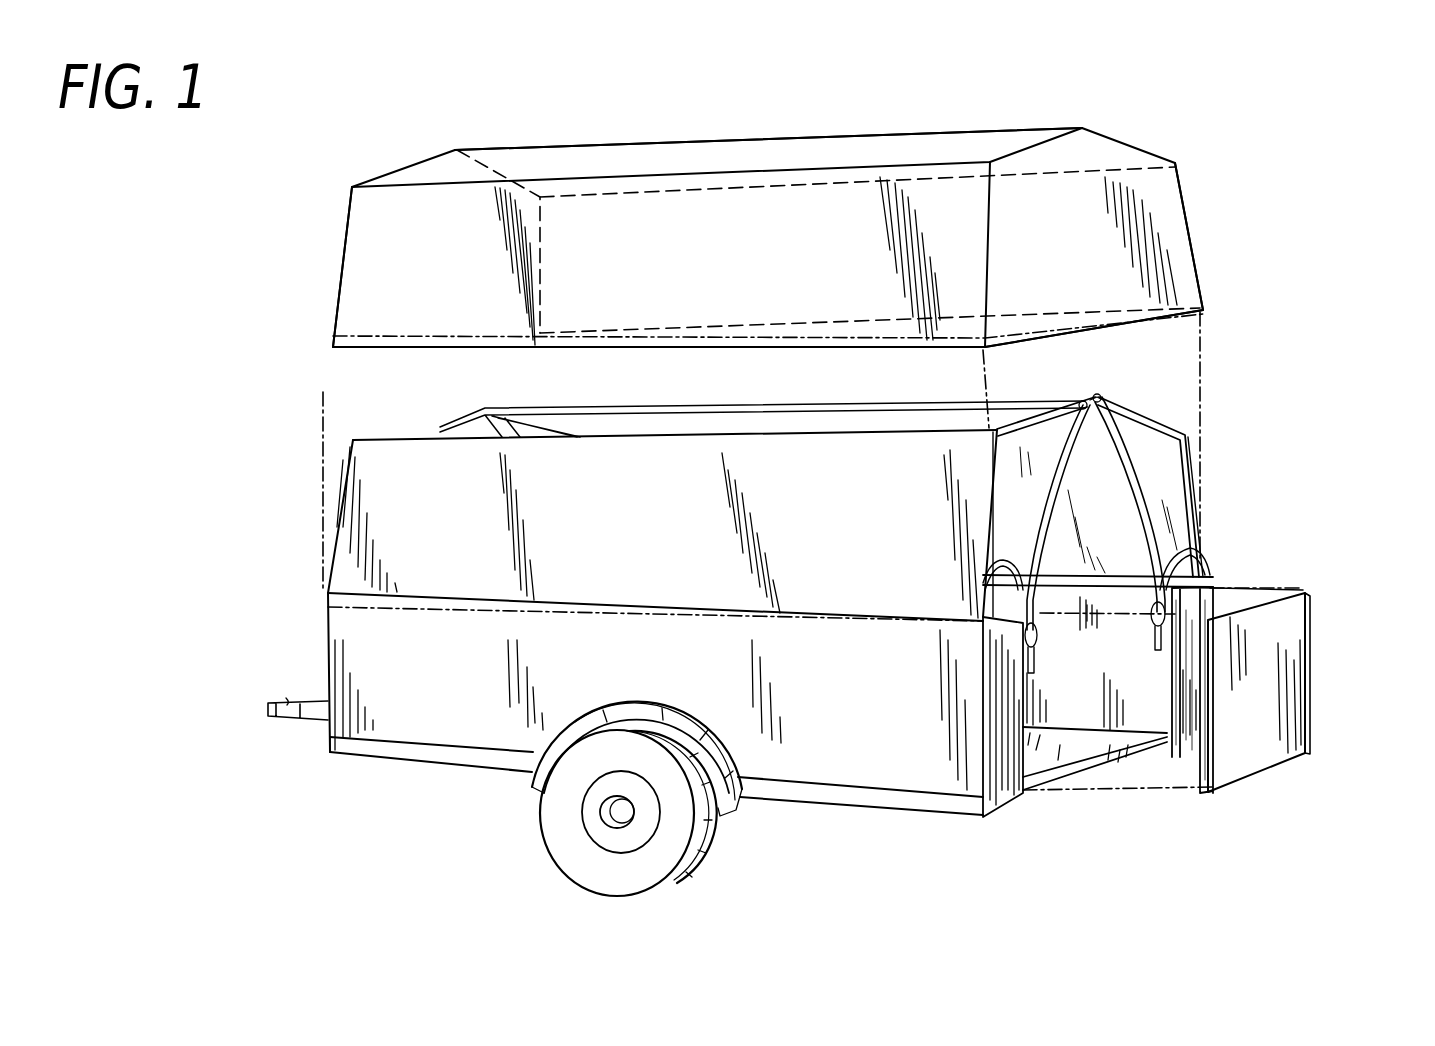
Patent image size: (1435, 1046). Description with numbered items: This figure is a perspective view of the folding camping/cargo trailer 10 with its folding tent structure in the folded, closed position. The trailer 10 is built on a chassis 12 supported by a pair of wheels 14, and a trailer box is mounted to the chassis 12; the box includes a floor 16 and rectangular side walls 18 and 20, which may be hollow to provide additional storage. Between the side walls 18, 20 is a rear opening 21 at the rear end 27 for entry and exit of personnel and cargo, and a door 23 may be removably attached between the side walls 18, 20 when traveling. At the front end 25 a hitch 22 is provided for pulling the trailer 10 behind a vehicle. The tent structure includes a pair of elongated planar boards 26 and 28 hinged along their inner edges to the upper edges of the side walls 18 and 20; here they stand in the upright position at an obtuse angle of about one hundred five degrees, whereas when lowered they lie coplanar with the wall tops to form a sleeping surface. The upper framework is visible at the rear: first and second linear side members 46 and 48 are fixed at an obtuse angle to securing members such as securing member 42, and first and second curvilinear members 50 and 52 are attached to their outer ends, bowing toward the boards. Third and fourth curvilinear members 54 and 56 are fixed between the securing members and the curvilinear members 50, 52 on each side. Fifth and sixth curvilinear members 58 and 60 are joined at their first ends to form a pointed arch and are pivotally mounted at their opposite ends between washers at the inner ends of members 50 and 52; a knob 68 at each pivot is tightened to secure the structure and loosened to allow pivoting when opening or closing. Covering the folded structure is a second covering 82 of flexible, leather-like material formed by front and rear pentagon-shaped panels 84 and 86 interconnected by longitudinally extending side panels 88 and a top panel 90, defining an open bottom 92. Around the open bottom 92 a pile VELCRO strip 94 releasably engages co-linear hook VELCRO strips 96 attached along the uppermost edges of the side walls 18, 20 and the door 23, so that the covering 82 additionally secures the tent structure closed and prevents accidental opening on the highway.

The folding camping/cargo trailer 10 is at (321, 390).
The chassis 12 is at (850, 798).
The wheels 14 is at (628, 870).
The floor 16 is at (1090, 752).
The side wall 18 is at (932, 762).
The side wall 20 is at (1140, 703).
The rear opening 21 is at (1056, 712).
The hitch 22 is at (282, 702).
The door 23 is at (1238, 753).
The front end 25 is at (298, 605).
The planar board 26 is at (846, 534).
The rear end 27 is at (1334, 468).
The planar board 28 is at (1162, 486).
The securing member 42 is at (1178, 468).
The first linear side member 46 is at (1027, 418).
The second linear side member 48 is at (1142, 412).
The first curvilinear member 50 is at (1042, 518).
The second curvilinear member 52 is at (1127, 470).
The third curvilinear member 54 is at (990, 568).
The fourth curvilinear member 56 is at (1187, 542).
The fifth curvilinear member 58 is at (1112, 500).
The sixth curvilinear member 60 is at (1126, 504).
The knob 68 is at (1153, 627).
The second covering 82 is at (788, 150).
The front pentagon-shaped panel 84 is at (1175, 200).
The rear pentagon-shaped panel 86 is at (385, 242).
The side panels 88 is at (1205, 282).
The top panel 90 is at (1043, 153).
The open bottom 92 is at (708, 350).
The pile VELCRO strip 94 is at (628, 338).
The hook VELCRO strips 96 is at (668, 610).